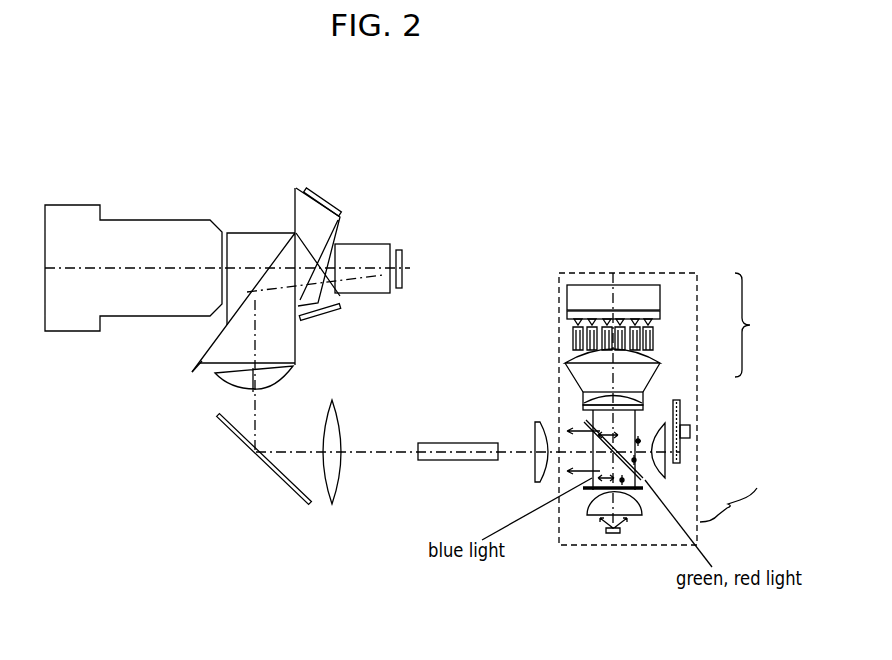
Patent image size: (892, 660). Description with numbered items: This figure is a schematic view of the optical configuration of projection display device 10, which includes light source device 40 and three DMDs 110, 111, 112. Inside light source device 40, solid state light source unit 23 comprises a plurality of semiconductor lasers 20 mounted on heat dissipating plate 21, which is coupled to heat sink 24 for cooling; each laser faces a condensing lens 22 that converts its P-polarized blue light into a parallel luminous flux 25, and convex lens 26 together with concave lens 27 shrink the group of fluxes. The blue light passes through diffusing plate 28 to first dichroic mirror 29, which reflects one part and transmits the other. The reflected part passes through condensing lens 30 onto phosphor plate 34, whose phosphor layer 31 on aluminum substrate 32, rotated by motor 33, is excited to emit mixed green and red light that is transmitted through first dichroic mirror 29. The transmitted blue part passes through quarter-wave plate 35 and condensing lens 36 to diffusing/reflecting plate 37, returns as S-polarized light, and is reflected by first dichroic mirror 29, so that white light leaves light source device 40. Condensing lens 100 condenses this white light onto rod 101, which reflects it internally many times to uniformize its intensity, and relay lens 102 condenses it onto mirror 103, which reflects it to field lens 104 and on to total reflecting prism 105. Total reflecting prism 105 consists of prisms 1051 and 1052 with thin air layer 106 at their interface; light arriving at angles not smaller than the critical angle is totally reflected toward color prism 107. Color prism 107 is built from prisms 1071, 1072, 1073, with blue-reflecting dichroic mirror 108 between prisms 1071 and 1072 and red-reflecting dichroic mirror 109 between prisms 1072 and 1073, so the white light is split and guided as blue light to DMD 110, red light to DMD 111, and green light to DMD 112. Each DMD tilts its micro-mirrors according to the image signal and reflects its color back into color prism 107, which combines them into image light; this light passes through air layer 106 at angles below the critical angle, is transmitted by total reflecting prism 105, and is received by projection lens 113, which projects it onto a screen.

The projection display device 10 is at (479, 123).
The projection lens 113 is at (140, 220).
The air layer 106 is at (275, 258).
The prism 1052 is at (240, 240).
The total reflecting prism 105 is at (205, 358).
The prism 1051 is at (194, 370).
The field lens 104 is at (292, 368).
The color prism 107 is at (293, 208).
The prism 1071 is at (302, 187).
The prism 1072 is at (342, 300).
The prism 1073 is at (378, 287).
The DMD 110 is at (325, 202).
The DMD 111 is at (338, 305).
The DMD 112 is at (403, 255).
The dichroic mirror 108 is at (310, 270).
The dichroic mirror 109 is at (313, 285).
The mirror 103 is at (290, 490).
The relay lens 102 is at (341, 493).
The rod 101 is at (455, 462).
The condensing lens 100 is at (536, 478).
The light source device 40 is at (645, 547).
The solid state light source unit 23 is at (752, 325).
The heat dissipating plate 21 is at (663, 300).
The heat sink 24 is at (652, 283).
The semiconductor laser 20 is at (658, 320).
The condensing lens 22 is at (652, 330).
The parallel luminous flux 25 is at (577, 338).
The convex lens 26 is at (570, 361).
The concave lens 27 is at (583, 393).
The diffusing plate 28 is at (585, 408).
The first dichroic mirror 29 is at (585, 443).
The condensing lens 30 is at (643, 423).
The phosphor layer 31 is at (677, 464).
The aluminum substrate 32 is at (686, 456).
The motor 33 is at (691, 429).
The phosphor plate 34 is at (728, 515).
The quarter-wave plate 35 is at (593, 483).
The condensing lens 36 is at (593, 513).
The diffusing/reflecting plate 37 is at (603, 537).